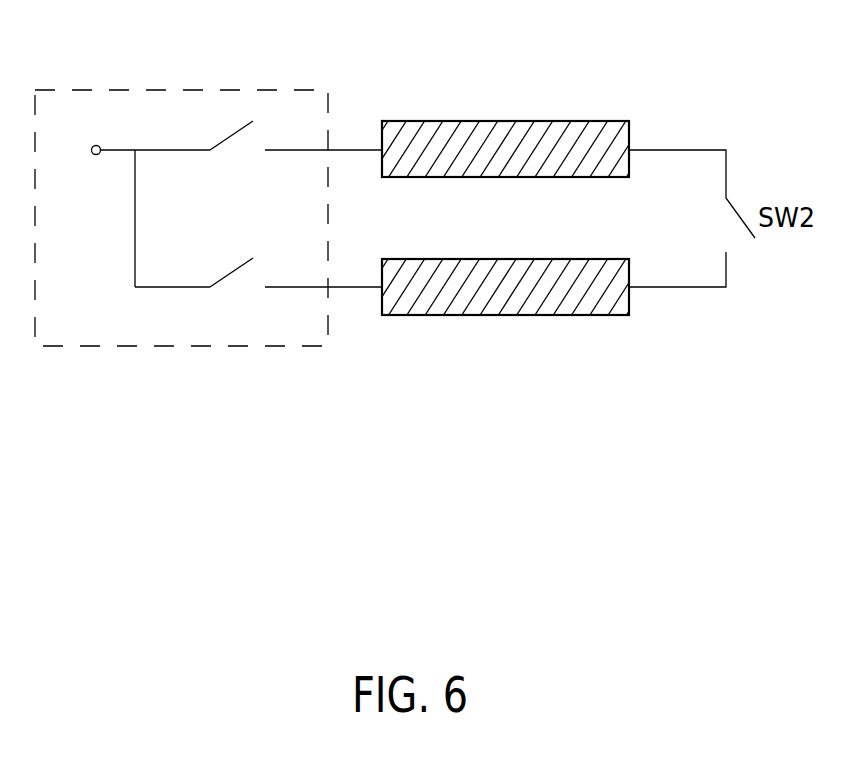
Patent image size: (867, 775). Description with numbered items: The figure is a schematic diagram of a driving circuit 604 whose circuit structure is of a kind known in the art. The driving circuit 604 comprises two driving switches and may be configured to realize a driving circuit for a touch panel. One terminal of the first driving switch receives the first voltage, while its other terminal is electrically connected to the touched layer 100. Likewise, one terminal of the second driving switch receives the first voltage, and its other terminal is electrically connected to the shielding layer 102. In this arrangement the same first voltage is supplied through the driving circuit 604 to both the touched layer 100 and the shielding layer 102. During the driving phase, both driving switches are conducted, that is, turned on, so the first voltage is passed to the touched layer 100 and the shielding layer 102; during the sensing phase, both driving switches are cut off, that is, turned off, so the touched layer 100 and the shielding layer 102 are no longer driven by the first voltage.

The driving circuit 604 is at (217, 90).
The touched layer 100 is at (585, 120).
The shielding layer 102 is at (585, 258).